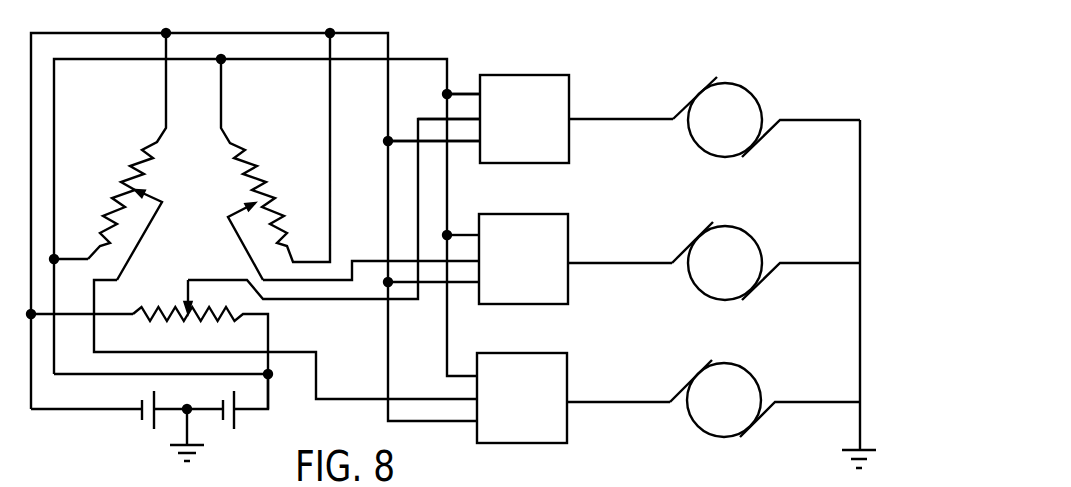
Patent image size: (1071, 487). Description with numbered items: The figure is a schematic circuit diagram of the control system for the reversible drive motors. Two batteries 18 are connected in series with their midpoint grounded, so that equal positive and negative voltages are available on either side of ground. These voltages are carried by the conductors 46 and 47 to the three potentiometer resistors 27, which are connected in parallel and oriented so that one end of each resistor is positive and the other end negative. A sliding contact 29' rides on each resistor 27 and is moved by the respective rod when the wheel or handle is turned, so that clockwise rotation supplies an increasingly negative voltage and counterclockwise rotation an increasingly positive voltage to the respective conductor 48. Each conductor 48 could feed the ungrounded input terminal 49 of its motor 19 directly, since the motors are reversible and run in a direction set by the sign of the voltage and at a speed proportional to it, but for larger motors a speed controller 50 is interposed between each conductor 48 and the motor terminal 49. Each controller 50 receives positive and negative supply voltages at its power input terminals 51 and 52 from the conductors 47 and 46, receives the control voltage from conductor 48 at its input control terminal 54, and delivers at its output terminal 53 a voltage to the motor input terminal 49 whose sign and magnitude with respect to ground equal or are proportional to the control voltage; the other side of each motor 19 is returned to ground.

The batteries 18 is at (222, 406).
The motor 19 is at (761, 110).
The potentiometer resistor 27 is at (122, 185).
The sliding contact 29' is at (286, 293).
The conductor 46 is at (103, 408).
The conductor 47 is at (268, 377).
The conductor 48 is at (245, 248).
The ungrounded input terminal 49 is at (637, 122).
The speed controller 50 is at (566, 164).
The power input terminal 51 is at (474, 92).
The power input terminal 52 is at (480, 145).
The output terminal 53 is at (570, 118).
The input control terminal 54 is at (477, 120).